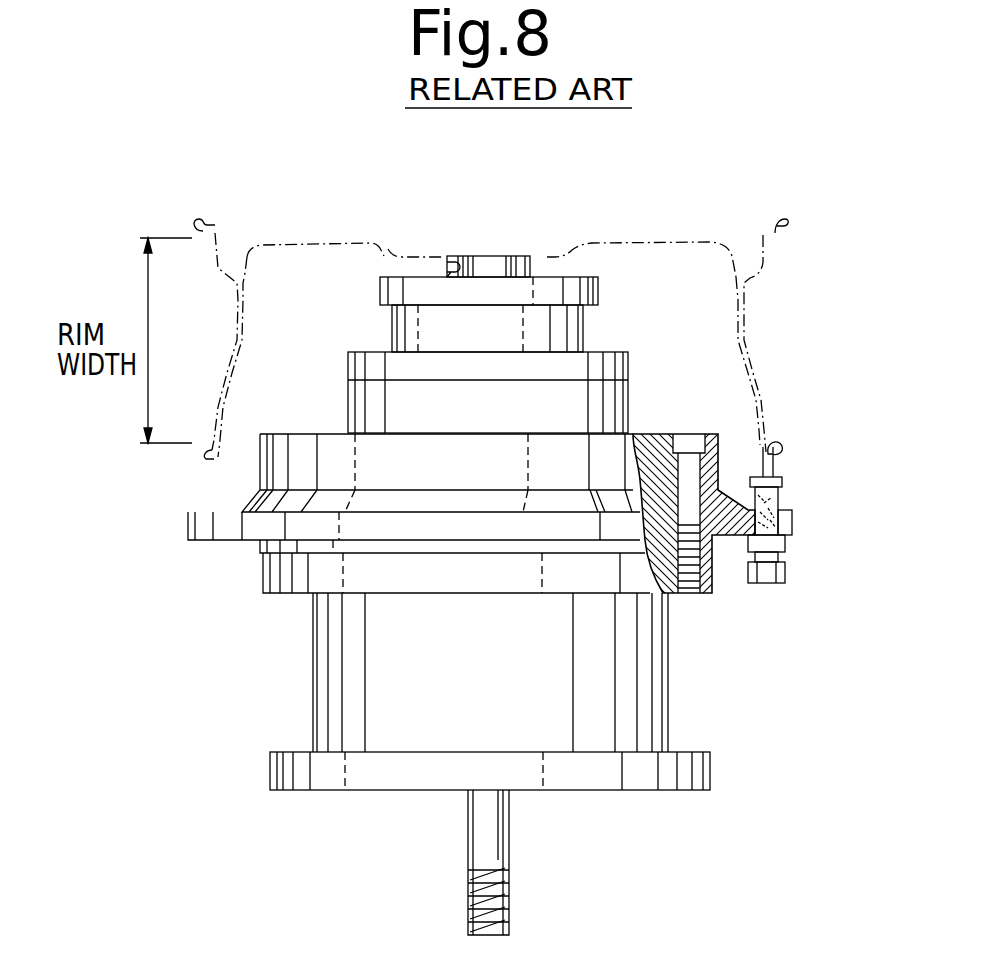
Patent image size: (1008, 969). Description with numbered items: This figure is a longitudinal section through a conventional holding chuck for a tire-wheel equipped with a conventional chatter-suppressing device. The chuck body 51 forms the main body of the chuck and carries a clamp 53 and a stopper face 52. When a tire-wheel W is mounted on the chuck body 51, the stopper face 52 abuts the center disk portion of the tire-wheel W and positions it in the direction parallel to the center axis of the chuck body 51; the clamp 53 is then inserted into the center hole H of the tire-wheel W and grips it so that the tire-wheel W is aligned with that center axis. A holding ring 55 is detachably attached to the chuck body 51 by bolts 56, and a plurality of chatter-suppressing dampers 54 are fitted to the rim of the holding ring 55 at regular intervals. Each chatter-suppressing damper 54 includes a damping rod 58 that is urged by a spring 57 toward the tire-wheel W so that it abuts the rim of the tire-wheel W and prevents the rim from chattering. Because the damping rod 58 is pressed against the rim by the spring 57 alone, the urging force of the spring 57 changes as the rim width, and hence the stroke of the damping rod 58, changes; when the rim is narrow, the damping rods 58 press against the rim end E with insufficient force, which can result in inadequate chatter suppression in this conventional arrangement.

The chuck body 51 is at (313, 678).
The stopper face 52 is at (560, 277).
The clamp 53 is at (487, 265).
The chatter-suppressing damper 54 is at (783, 497).
The holding ring 55 is at (735, 527).
The bolt 56 is at (692, 443).
The spring 57 is at (797, 527).
The damping rod 58 is at (774, 470).
The center hole H is at (455, 265).
The tire-wheel W is at (688, 242).
The rim end E is at (777, 445).